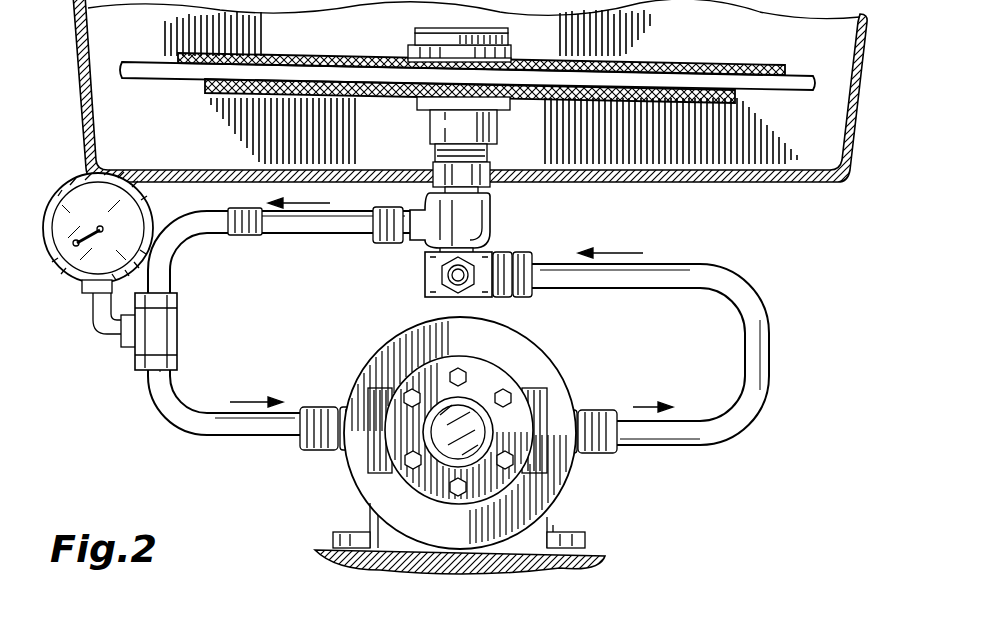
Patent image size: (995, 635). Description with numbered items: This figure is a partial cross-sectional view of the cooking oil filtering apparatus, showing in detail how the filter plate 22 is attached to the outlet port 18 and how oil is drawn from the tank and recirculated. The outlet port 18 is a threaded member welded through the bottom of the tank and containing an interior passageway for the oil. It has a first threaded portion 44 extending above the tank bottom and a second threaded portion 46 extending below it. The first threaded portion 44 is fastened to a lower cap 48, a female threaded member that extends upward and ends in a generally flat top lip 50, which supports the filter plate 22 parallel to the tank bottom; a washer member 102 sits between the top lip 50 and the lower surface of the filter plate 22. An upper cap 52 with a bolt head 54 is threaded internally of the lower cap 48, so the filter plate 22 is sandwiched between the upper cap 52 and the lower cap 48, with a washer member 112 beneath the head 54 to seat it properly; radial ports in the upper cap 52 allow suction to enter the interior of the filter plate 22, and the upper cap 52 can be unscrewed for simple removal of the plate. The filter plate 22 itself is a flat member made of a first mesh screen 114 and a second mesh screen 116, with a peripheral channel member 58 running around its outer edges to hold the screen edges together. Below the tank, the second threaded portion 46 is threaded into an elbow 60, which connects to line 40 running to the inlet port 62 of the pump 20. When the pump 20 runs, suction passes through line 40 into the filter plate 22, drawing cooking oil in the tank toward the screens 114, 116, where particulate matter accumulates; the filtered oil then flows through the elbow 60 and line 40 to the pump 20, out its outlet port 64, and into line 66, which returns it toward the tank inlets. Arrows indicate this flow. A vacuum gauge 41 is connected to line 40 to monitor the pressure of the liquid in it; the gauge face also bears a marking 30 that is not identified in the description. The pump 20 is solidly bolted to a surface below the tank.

The outlet port 18 is at (485, 184).
The pump 20 is at (376, 490).
The filter plate 22 is at (470, 76).
The vacuum gauge 30 is at (98, 258).
The line 40 is at (305, 233).
The vacuum gauge 41 is at (148, 218).
The first threaded portion 44 is at (492, 150).
The second threaded portion 46 is at (485, 205).
The lower cap 48 is at (495, 136).
The top lip 50 is at (500, 108).
The upper cap 52 is at (432, 30).
The bolt head 54 is at (511, 10).
The peripheral channel member 58 is at (805, 76).
The elbow 60 is at (425, 253).
The inlet port 62 is at (350, 452).
The outlet port 64 is at (590, 453).
The line 66 is at (771, 365).
The washer member 102 is at (412, 108).
The washer member 112 is at (512, 50).
The first mesh screen 114 is at (272, 55).
The second mesh screen 116 is at (270, 95).